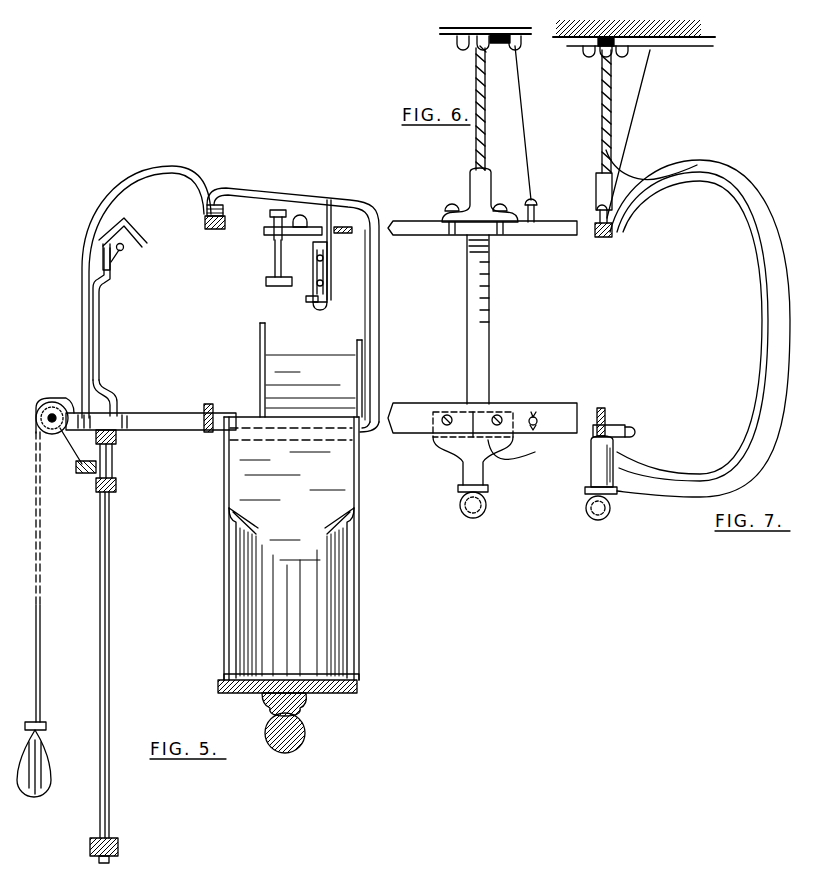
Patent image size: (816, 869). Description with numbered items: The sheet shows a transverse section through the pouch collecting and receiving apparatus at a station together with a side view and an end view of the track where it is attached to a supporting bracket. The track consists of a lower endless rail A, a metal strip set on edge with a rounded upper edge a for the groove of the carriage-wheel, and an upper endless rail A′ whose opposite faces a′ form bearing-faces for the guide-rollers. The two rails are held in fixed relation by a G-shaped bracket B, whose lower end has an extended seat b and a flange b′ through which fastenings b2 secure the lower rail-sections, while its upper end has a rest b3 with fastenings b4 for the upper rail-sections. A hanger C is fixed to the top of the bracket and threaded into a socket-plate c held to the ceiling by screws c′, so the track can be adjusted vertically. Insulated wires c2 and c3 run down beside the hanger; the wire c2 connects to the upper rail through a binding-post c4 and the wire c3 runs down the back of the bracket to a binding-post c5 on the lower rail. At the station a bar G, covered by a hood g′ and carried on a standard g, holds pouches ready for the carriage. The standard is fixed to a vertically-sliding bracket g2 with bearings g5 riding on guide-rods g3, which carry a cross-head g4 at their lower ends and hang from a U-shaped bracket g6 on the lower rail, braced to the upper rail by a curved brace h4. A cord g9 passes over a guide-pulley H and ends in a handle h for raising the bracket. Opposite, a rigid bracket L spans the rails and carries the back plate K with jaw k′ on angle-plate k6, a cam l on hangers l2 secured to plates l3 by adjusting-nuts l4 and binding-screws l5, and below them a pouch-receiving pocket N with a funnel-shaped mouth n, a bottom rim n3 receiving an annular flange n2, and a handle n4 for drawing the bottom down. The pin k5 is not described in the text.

In FIG. 5, the brace h4 is at (80, 268).
In FIG. 5, the standard g is at (99, 331).
In FIG. 5, the bar G is at (119, 257).
In FIG. 5, the hood g′ is at (129, 225).
In FIG. 5, the guide-pulley H is at (48, 404).
In FIG. 5, the U-shaped bracket g6 is at (151, 417).
In FIG. 5, the lower endless rail A is at (208, 406).
In FIG. 6, the lower endless rail A is at (482, 418).
In FIG. 7, the lower endless rail A is at (592, 438).
In FIG. 5, the bearings g5 is at (117, 438).
In FIG. 5, the vertically-sliding bracket g2 is at (114, 460).
In FIG. 5, the guide-rods g3 is at (110, 636).
In FIG. 5, the cross-head g4 is at (115, 851).
In FIG. 5, the cord g9 is at (41, 521).
In FIG. 5, the handle h is at (47, 764).
In FIG. 5, the funnel-shaped mouth n is at (268, 370).
In FIG. 5, the pouch-receiving pocket N is at (291, 548).
In FIG. 5, the annular flange n2 is at (294, 682).
In FIG. 5, the bottom rim n3 is at (226, 680).
In FIG. 5, the handle n4 is at (302, 746).
In FIG. 5, the bracket L is at (287, 205).
In FIG. 5, the upper endless rail A′ is at (214, 230).
In FIG. 6, the upper endless rail A′ is at (520, 235).
In FIG. 7, the upper endless rail A′ is at (612, 234).
In FIG. 5, the plates l3 is at (265, 231).
In FIG. 5, the adjusting-nuts l4 is at (271, 222).
In FIG. 5, the binding-screws l5 is at (304, 219).
In FIG. 5, the hangers l2 is at (276, 258).
In FIG. 5, the back plate K is at (328, 297).
In FIG. 5, the pin k5 is at (317, 261).
In FIG. 5, the cam l is at (321, 286).
In FIG. 5, the angle-plate k6 is at (331, 262).
In FIG. 5, the jaw k′ is at (314, 301).
In FIG. 6, the socket-plates c is at (478, 47).
In FIG. 7, the socket-plates c is at (601, 53).
In FIG. 6, the screws c′ is at (459, 47).
In FIG. 7, the screws c′ is at (586, 53).
In FIG. 6, the insulated wire c3 is at (482, 50).
In FIG. 7, the insulated wire c3 is at (630, 172).
In FIG. 6, the hangers C is at (489, 109).
In FIG. 7, the hangers C is at (601, 112).
In FIG. 6, the insulated wire c2 is at (527, 144).
In FIG. 7, the insulated wire c2 is at (642, 96).
In FIG. 6, the binding-post c4 is at (538, 207).
In FIG. 7, the binding-post c4 is at (597, 210).
In FIG. 6, the rest b3 is at (447, 219).
In FIG. 6, the fastenings b4 is at (452, 204).
In FIG. 6, the bearing-faces a′ is at (438, 235).
In FIG. 7, the bearing-faces a′ is at (613, 228).
In FIG. 6, the bracket B is at (477, 319).
In FIG. 7, the bracket B is at (760, 308).
In FIG. 6, the seat b is at (433, 440).
In FIG. 7, the seat b is at (592, 447).
In FIG. 6, the flange b′ is at (490, 418).
In FIG. 7, the flange b′ is at (612, 428).
In FIG. 6, the fastenings b2 is at (447, 414).
In FIG. 6, the binding-post c5 is at (536, 428).
In FIG. 7, the binding-post c5 is at (628, 427).
In FIG. 7, the upper edge a is at (604, 412).